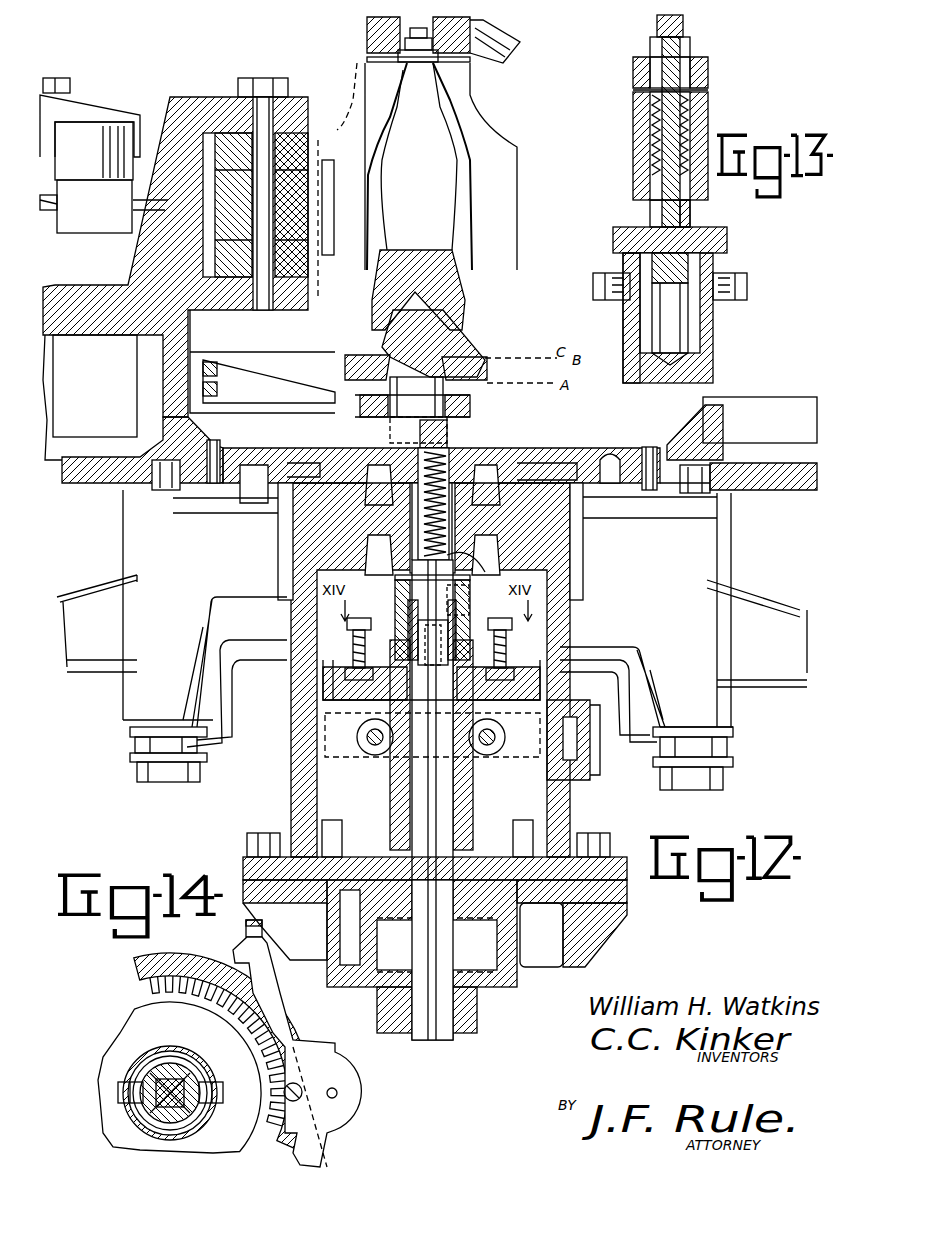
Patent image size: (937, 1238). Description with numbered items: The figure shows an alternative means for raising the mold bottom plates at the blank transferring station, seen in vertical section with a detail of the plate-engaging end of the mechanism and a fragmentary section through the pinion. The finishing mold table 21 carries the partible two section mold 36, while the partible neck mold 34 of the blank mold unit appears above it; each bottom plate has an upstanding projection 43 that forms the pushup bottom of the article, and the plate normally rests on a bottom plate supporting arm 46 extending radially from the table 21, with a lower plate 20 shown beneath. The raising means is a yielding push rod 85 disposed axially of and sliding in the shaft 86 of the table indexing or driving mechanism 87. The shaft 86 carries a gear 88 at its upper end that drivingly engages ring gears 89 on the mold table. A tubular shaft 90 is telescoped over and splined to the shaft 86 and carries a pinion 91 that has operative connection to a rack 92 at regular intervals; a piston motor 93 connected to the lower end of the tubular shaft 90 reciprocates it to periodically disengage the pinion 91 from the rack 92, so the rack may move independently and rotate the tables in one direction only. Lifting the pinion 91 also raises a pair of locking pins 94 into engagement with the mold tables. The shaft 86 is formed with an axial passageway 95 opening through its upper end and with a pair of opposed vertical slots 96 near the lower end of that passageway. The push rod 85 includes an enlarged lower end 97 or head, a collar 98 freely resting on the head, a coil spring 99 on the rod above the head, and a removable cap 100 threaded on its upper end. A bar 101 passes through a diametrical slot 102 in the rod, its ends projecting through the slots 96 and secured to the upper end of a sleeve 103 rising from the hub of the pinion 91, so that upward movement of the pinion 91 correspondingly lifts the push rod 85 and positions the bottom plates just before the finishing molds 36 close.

In FIG. 12, the table plate 20 is at (722, 416).
In FIG. 12, the finishing mold table 21 is at (97, 337).
In FIG. 12, the partible neck mold 34 is at (368, 35).
In FIG. 12, the partible two section mold 36 is at (483, 117).
In FIG. 12, the upstanding projection 43 is at (428, 310).
In FIG. 12, the bottom plate supporting arm 46 is at (298, 408).
In FIG. 12, the yielding push rod 85 is at (462, 446).
In FIG. 13, the yielding push rod 85 is at (702, 40).
In FIG. 12, the shaft 86 is at (435, 785).
In FIG. 13, the shaft 86 is at (700, 356).
In FIG. 14, the shaft 86 is at (190, 1105).
In FIG. 12, the table indexing or driving mechanism 87 is at (258, 806).
In FIG. 12, the gear 88 is at (632, 448).
In FIG. 12, the ring gears 89 is at (214, 447).
In FIG. 12, the tubular shaft 90 is at (395, 778).
In FIG. 12, the pinion 91 is at (322, 690).
In FIG. 14, the pinion 91 is at (140, 1000).
In FIG. 12, the rack 92 is at (548, 750).
In FIG. 14, the rack 92 is at (262, 950).
In FIG. 12, the piston motor 93 is at (497, 945).
In FIG. 12, the locking pins 94 is at (168, 478).
In FIG. 12, the axial passageway 95 is at (440, 645).
In FIG. 13, the axial passageway 95 is at (680, 320).
In FIG. 12, the vertical slots 96 is at (408, 647).
In FIG. 13, the vertical slots 96 is at (705, 219).
In FIG. 14, the vertical slots 96 is at (150, 1108).
In FIG. 12, the enlarged lower end 97 is at (422, 605).
In FIG. 13, the enlarged lower end 97 is at (675, 268).
In FIG. 14, the enlarged lower end 97 is at (172, 1085).
In FIG. 12, the collar 98 is at (470, 573).
In FIG. 13, the collar 98 is at (652, 185).
In FIG. 12, the coil spring 99 is at (448, 493).
In FIG. 13, the coil spring 99 is at (650, 137).
In FIG. 12, the removable cap 100 is at (418, 425).
In FIG. 13, the removable cap 100 is at (655, 30).
In FIG. 12, the bar 101 is at (475, 600).
In FIG. 13, the bar 101 is at (640, 230).
In FIG. 13, the diametrical slot 102 is at (662, 213).
In FIG. 12, the sleeve 103 is at (368, 650).
In FIG. 13, the sleeve 103 is at (628, 322).
In FIG. 14, the sleeve 103 is at (185, 1070).